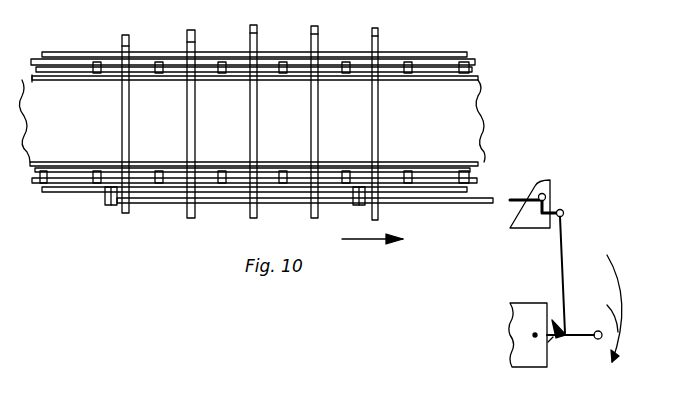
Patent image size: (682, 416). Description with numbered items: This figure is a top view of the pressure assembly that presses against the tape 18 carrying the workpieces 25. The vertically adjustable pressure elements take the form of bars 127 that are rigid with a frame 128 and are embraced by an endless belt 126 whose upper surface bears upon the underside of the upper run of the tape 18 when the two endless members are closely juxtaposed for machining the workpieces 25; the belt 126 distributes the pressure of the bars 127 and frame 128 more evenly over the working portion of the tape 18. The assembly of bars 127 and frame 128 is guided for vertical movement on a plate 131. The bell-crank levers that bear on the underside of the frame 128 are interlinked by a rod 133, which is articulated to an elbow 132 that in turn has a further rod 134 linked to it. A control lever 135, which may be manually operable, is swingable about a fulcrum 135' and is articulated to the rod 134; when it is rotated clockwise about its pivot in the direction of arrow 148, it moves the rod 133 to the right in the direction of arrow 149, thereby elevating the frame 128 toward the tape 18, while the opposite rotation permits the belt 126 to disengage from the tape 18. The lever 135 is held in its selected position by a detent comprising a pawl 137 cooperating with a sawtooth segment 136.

The tape 18 is at (36, 103).
The workpieces 25 is at (249, 95).
The endless belt 126 is at (70, 173).
The bars 127 is at (344, 62).
The frame 128 is at (301, 205).
The plate 131 is at (442, 55).
The elbow 132 is at (552, 193).
The rod 133 is at (528, 202).
The rod 134 is at (562, 290).
The control lever 135 is at (586, 365).
The fulcrum 135' is at (496, 345).
The sawtooth segment 136 is at (548, 350).
The pawl 137 is at (565, 328).
The arrow 148 is at (606, 298).
The arrow 149 is at (357, 240).